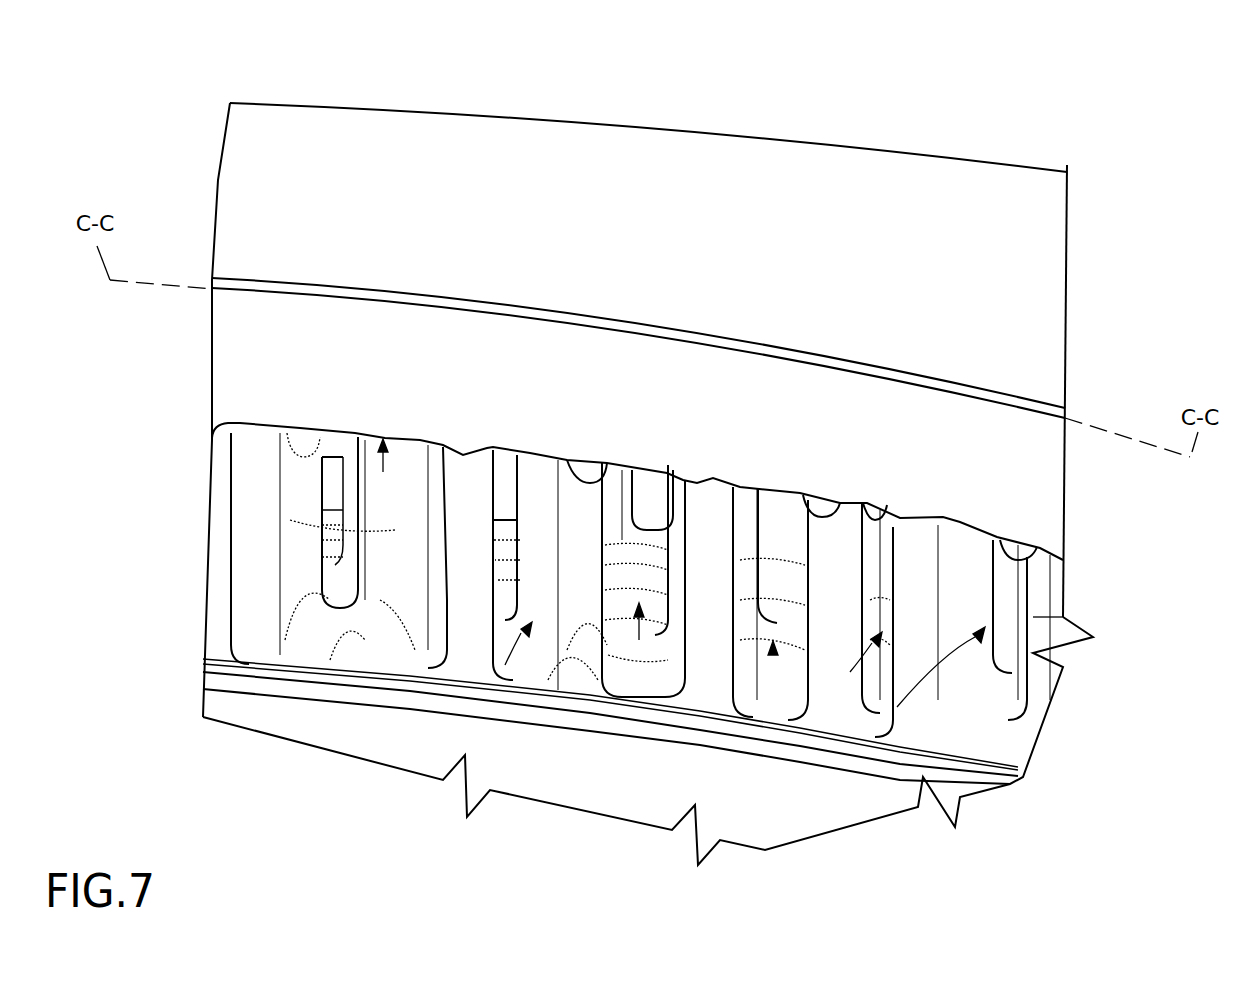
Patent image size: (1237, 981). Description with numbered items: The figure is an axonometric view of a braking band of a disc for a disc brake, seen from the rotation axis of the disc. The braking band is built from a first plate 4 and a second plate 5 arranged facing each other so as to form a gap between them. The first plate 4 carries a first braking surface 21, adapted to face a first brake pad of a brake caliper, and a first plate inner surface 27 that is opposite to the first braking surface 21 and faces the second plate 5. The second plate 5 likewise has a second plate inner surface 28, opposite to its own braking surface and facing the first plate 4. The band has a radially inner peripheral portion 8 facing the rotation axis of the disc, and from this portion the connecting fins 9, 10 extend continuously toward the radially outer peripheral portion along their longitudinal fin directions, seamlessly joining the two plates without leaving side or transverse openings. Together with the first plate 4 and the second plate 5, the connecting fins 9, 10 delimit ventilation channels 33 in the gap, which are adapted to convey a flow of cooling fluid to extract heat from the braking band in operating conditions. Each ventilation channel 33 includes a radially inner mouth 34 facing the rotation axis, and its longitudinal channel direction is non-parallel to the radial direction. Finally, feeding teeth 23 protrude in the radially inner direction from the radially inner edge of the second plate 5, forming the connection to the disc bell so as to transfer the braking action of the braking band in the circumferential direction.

The first plate 4 is at (240, 333).
The second plate 5 is at (257, 705).
The radially inner peripheral portion 8 is at (537, 672).
The connecting fin 9 is at (540, 497).
The connecting fin 10 is at (415, 610).
The first braking surface 21 is at (380, 158).
The feeding teeth 23 is at (357, 505).
The first plate inner surface 27 is at (393, 470).
The second plate inner surface 28 is at (380, 635).
The ventilation channel 33 is at (564, 690).
The radially inner mouth 34 is at (257, 627).